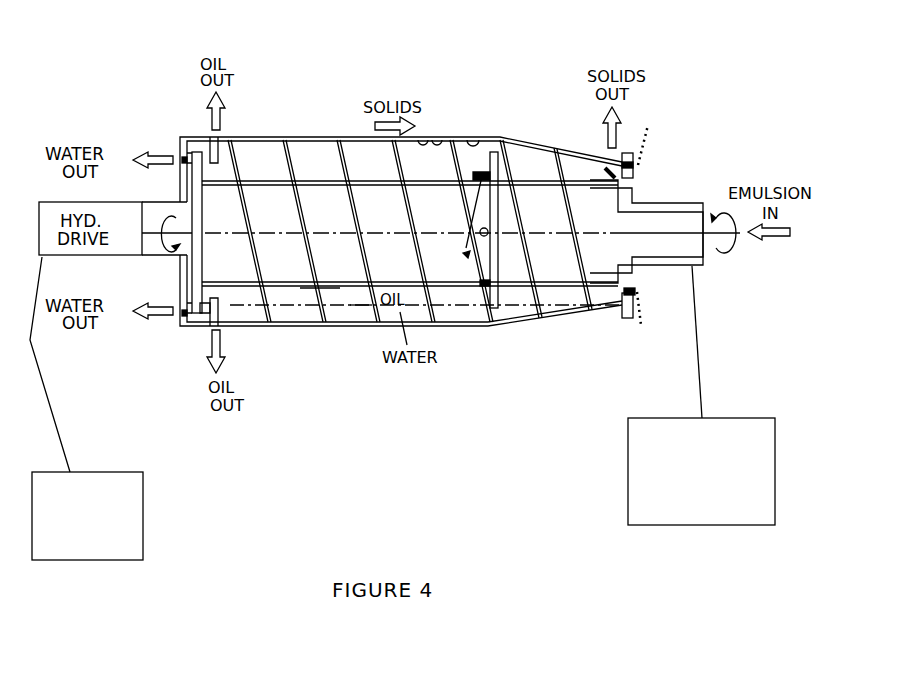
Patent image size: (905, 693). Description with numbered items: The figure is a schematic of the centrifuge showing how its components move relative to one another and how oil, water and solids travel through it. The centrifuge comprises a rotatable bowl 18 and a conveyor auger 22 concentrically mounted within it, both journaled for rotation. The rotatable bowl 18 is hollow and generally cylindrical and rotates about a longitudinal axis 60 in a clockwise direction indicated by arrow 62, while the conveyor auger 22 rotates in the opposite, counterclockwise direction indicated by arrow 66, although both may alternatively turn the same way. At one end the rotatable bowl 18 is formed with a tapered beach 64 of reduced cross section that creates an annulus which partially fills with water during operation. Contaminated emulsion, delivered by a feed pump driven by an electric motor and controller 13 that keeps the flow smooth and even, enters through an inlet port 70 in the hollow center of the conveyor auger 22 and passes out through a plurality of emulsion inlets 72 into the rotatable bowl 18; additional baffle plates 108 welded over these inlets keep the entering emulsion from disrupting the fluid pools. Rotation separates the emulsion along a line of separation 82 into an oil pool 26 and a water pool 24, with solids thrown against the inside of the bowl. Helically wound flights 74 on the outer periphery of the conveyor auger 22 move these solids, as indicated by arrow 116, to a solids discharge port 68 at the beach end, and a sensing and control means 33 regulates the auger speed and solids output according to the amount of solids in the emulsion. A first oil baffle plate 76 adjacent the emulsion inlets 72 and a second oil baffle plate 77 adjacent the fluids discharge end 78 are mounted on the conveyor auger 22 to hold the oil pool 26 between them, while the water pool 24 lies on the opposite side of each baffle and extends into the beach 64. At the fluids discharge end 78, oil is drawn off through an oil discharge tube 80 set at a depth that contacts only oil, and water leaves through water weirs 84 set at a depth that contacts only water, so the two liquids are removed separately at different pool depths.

The electric motor and controller 13 is at (628, 453).
The rotatable bowl 18 is at (298, 140).
The conveyor auger 22 is at (290, 284).
The water pool 24 is at (425, 315).
The oil pool 26 is at (324, 296).
The sensing and control means 33 is at (143, 523).
The longitudinal axis 60 is at (640, 234).
The arrow indicating clockwise rotation 62 is at (728, 253).
The tapered beach 64 is at (535, 145).
The arrow indicating counterclockwise rotation 66 is at (160, 246).
The solids discharge port 68 is at (648, 125).
The inlet port 70 is at (655, 227).
The emulsion inlets 72 is at (484, 238).
The helically wound flights 74 is at (588, 281).
The first oil baffle plate 76 is at (497, 150).
The second oil baffle plate 77 is at (196, 151).
The fluids discharge end 78 is at (200, 315).
The oil discharge tube 80 is at (218, 148).
The line of separation 82 is at (362, 306).
The water weirs 84 is at (182, 152).
The additional baffle plates 108 is at (492, 151).
The arrow indicating solids movement 116 is at (387, 127).